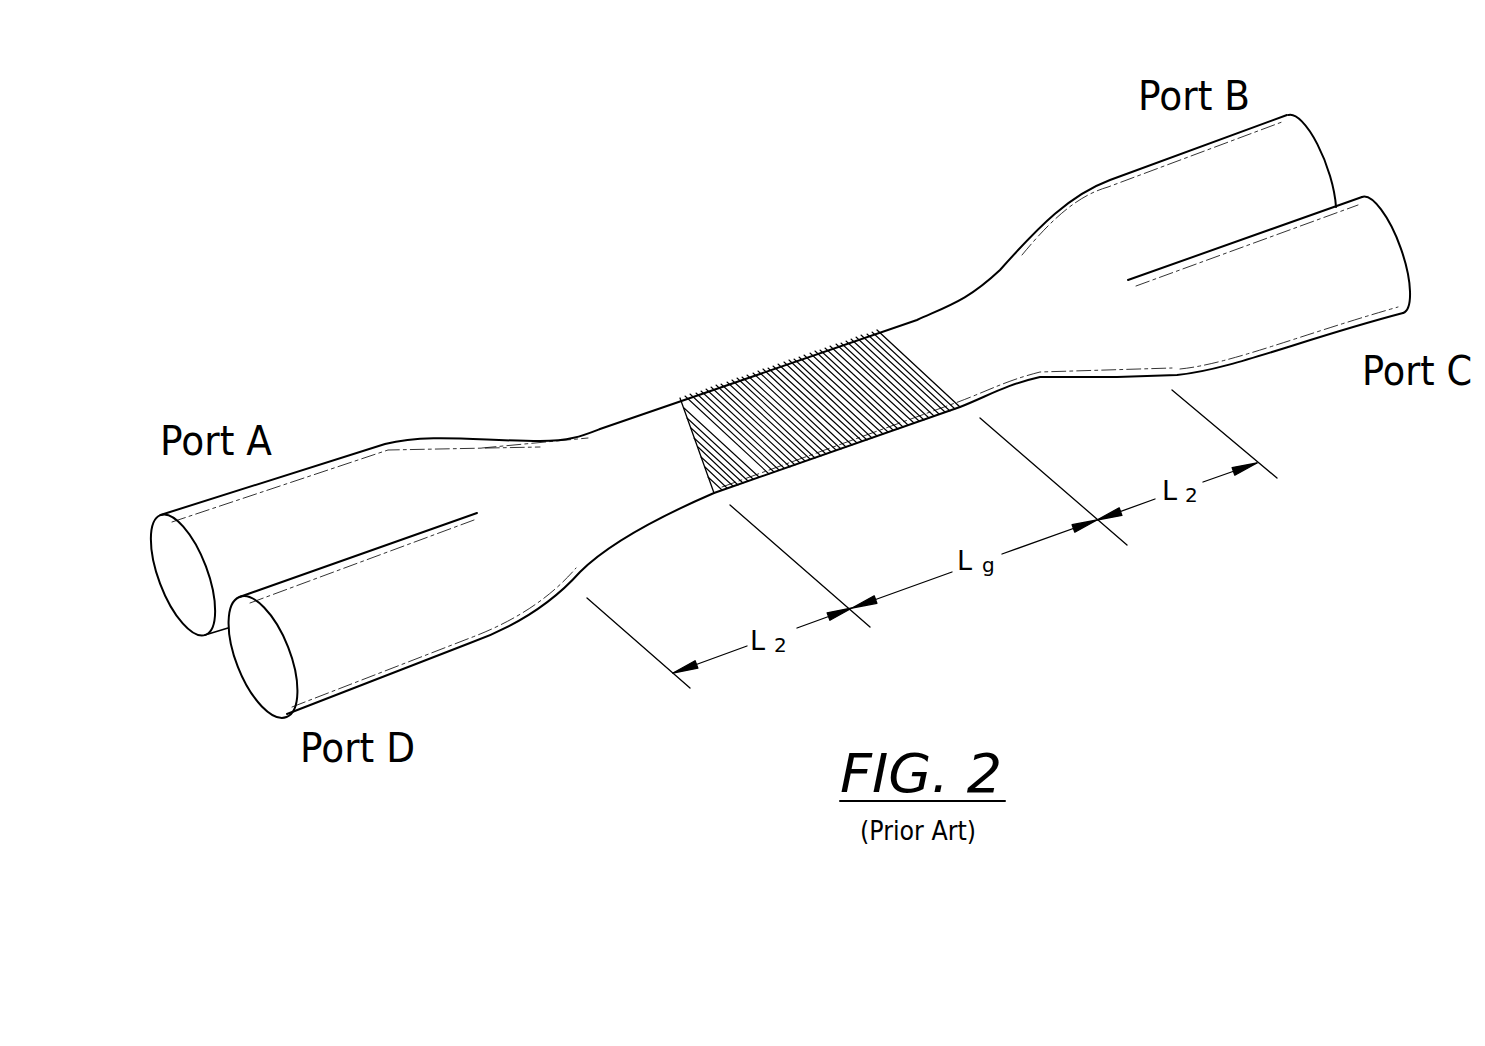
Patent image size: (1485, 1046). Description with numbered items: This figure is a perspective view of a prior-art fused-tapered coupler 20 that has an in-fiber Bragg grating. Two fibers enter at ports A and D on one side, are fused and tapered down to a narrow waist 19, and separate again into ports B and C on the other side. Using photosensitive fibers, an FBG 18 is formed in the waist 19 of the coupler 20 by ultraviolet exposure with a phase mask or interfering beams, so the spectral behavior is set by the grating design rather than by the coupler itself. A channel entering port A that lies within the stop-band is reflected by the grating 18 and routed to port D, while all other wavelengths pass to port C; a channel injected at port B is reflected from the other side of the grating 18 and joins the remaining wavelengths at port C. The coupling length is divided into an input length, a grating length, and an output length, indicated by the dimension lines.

The fiber Bragg grating 18 is at (682, 397).
The waist 19 is at (807, 352).
The coupler 20 is at (730, 337).